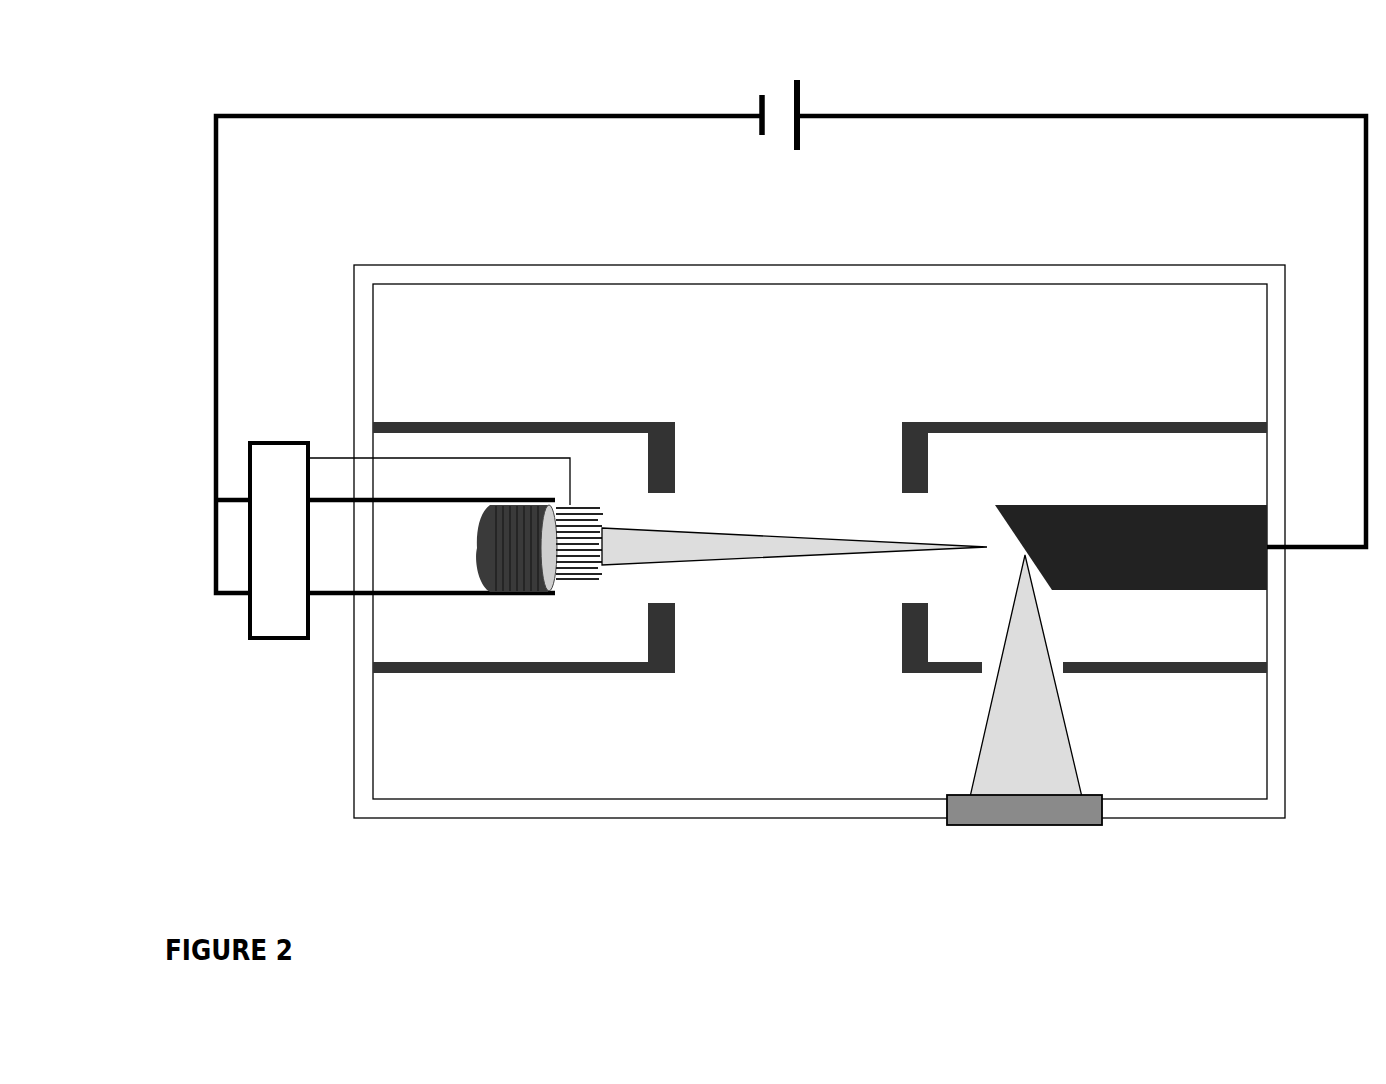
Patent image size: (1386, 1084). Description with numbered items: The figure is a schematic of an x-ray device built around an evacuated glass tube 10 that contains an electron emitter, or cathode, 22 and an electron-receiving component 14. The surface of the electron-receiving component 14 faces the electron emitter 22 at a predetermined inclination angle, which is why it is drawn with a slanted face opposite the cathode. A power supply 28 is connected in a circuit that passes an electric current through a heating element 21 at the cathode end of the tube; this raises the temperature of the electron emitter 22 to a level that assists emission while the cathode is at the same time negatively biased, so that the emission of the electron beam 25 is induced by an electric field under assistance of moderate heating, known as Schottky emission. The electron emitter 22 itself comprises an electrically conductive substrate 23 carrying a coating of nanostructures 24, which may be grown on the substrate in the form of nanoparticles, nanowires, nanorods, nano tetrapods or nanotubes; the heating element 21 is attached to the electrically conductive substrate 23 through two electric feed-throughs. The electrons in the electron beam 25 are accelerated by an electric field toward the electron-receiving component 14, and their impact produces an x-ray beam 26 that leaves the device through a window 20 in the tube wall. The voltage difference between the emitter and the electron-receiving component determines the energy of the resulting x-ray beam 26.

The evacuated glass tube 10 is at (437, 819).
The electron-receiving component 14 is at (1100, 505).
The window 20 is at (1073, 827).
The heating element 21 is at (265, 640).
The electron emitter 22 is at (477, 547).
The electrically conductive substrate 23 is at (560, 508).
The coating of nanostructures 24 is at (583, 583).
The electron beam 25 is at (758, 557).
The x-ray beam 26 is at (1070, 722).
The power supply 28 is at (800, 92).